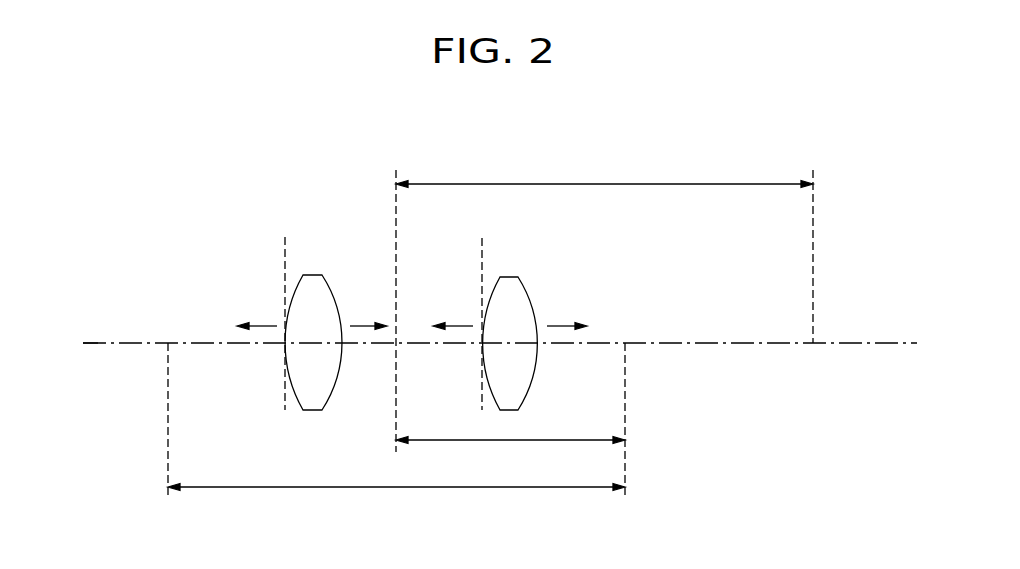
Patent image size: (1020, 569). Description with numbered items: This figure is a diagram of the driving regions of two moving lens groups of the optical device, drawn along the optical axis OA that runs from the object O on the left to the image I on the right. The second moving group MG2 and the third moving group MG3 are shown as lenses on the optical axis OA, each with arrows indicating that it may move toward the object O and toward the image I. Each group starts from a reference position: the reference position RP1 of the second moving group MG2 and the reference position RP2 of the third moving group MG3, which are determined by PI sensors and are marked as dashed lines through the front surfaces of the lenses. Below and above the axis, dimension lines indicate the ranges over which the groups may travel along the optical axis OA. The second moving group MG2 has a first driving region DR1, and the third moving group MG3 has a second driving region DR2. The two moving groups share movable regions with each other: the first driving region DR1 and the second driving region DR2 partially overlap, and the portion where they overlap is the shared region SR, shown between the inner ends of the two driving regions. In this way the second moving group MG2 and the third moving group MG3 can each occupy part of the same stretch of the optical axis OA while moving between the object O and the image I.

The object O is at (79, 344).
The optical axis OA is at (127, 343).
The image I is at (874, 264).
The reference position RP1 is at (285, 310).
The reference position RP2 is at (483, 310).
The second moving group MG2 is at (325, 288).
The third moving group MG3 is at (522, 287).
The first driving region DR1 is at (396, 431).
The second driving region DR2 is at (604, 171).
The shared region SR is at (510, 321).